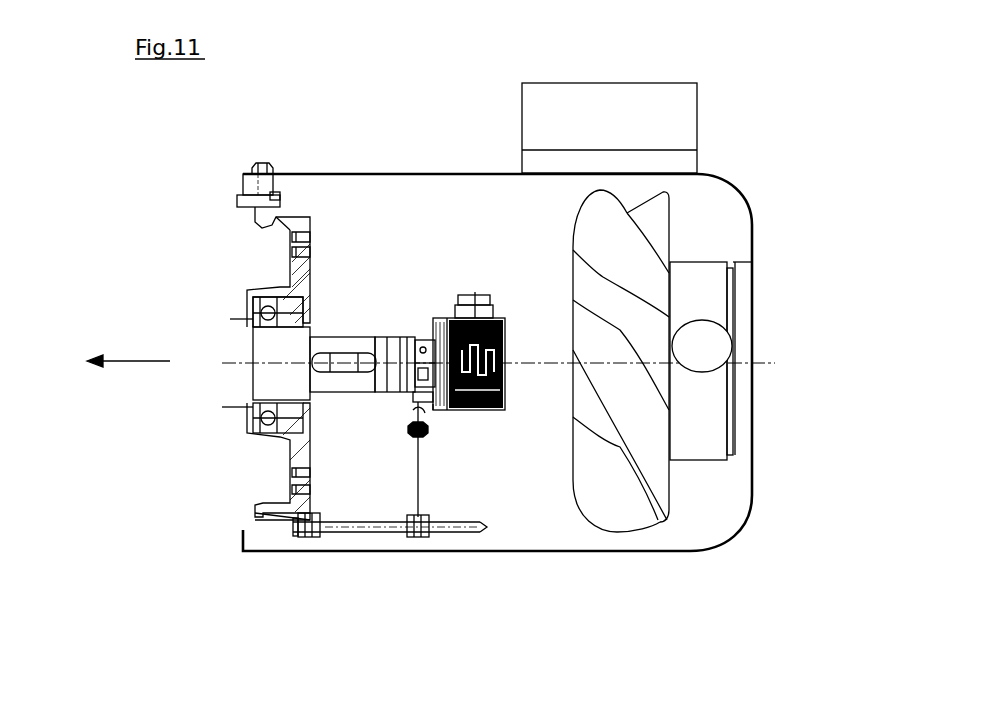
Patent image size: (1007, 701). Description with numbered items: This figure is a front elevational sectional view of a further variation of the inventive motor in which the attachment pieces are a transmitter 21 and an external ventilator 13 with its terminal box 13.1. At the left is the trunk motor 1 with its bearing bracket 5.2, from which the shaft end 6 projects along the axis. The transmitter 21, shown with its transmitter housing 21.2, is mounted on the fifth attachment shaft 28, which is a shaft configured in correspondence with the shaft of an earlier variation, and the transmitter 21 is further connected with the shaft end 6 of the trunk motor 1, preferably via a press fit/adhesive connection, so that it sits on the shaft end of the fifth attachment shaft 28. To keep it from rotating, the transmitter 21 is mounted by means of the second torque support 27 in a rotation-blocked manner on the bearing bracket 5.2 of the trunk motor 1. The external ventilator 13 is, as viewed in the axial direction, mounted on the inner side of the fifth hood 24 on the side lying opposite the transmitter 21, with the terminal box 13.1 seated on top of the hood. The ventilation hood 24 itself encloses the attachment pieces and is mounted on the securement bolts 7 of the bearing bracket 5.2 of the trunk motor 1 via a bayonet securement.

The trunk motor 1 is at (57, 372).
The bearing bracket 5.2 is at (290, 277).
The shaft end 6 is at (350, 343).
The securement bolts 7 is at (263, 163).
The external ventilator 13 is at (617, 507).
The terminal box 13.1 is at (697, 130).
The transmitter 21 is at (485, 395).
The transmitter housing 21.2 is at (458, 410).
The fifth hood 24 is at (752, 490).
The second torque support 27 is at (412, 535).
The fifth attachment shaft 28 is at (402, 338).